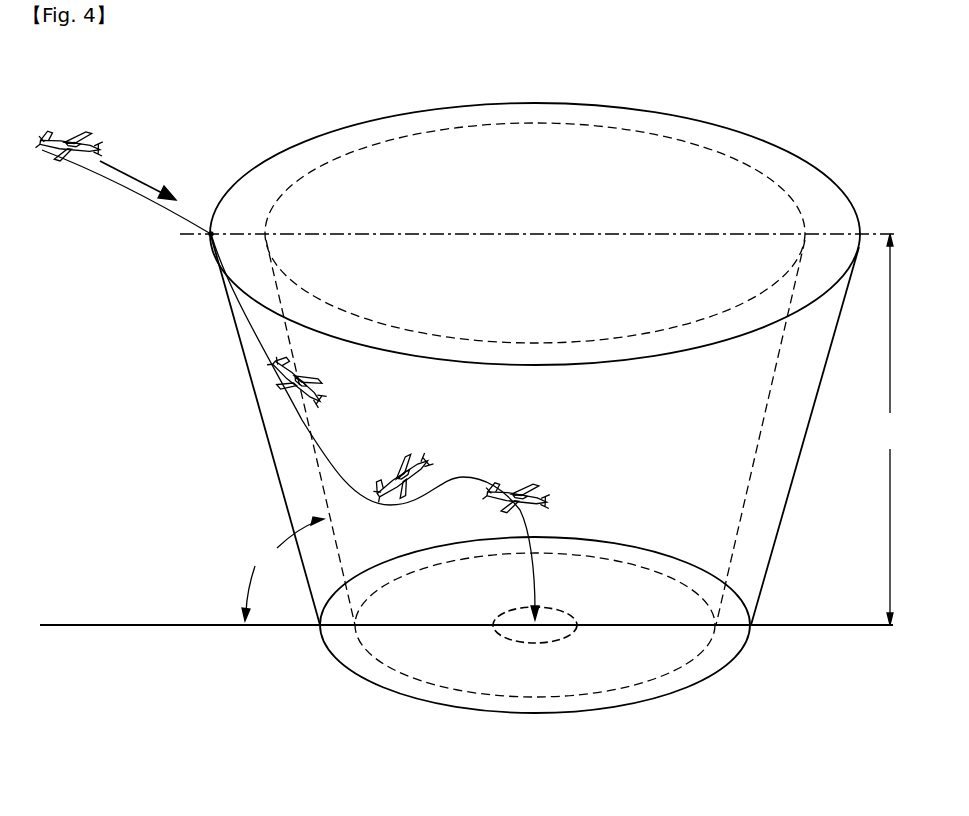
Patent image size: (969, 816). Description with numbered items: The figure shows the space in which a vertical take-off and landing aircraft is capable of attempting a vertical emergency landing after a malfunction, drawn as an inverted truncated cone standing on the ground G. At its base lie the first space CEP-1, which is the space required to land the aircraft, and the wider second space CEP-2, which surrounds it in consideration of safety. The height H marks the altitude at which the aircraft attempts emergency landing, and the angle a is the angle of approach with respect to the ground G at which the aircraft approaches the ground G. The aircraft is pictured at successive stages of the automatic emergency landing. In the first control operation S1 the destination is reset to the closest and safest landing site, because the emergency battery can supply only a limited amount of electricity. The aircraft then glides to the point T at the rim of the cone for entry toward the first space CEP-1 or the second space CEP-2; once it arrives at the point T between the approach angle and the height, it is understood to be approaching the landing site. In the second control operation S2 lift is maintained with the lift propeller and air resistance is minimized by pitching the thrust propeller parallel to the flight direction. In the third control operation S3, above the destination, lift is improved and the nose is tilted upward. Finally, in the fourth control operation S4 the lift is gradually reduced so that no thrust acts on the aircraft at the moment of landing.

The first control operation S1 is at (79, 116).
The second control operation S2 is at (326, 380).
The third control operation S3 is at (409, 452).
The fourth control operation S4 is at (540, 490).
The point T is at (211, 234).
The angle of approach a is at (283, 569).
The ground G is at (155, 625).
The height H is at (891, 429).
The first space CEP-1 is at (365, 650).
The second space CEP-2 is at (390, 690).